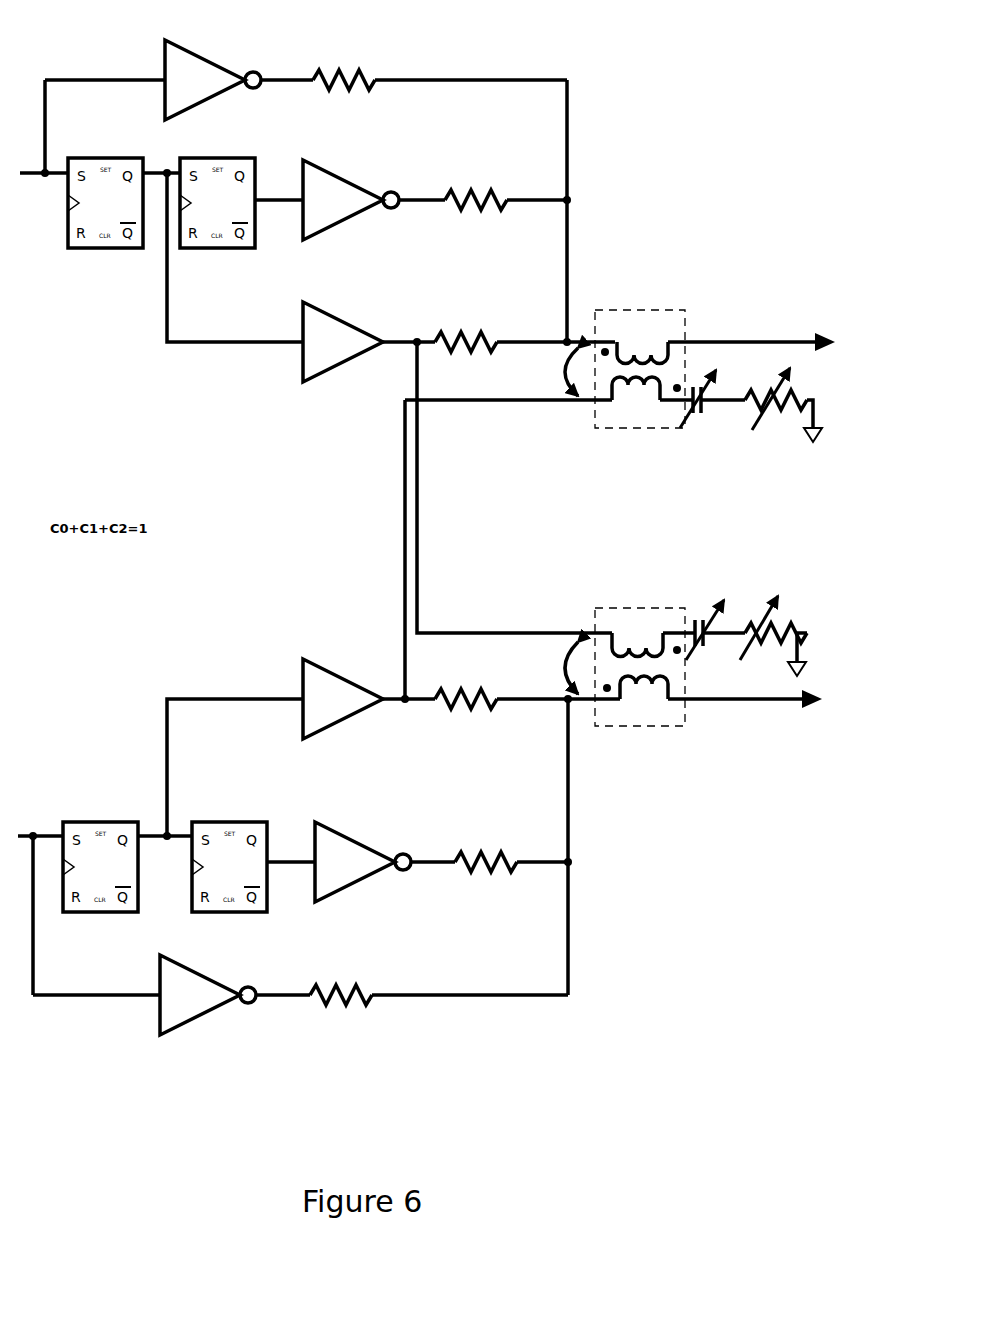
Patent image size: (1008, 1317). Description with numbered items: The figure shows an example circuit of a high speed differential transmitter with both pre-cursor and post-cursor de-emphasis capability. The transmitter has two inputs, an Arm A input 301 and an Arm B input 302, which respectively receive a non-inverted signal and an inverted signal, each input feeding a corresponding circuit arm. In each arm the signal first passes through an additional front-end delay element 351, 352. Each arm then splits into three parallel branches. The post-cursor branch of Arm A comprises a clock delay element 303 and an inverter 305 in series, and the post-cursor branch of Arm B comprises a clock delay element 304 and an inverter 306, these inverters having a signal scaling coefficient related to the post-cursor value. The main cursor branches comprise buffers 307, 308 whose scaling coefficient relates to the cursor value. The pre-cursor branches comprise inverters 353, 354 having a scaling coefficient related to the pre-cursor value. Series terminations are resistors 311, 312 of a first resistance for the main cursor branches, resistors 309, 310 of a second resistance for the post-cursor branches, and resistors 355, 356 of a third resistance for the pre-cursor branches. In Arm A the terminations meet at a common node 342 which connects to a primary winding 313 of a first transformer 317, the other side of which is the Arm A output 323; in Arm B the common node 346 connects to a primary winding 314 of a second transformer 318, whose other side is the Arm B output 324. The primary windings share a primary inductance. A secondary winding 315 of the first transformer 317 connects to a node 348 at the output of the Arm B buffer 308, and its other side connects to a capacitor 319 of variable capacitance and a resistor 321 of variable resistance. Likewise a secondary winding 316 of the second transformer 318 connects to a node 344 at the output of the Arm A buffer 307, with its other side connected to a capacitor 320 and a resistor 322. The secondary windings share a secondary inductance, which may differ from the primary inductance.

The Arm A input 301 is at (30, 323).
The Arm B input 302 is at (20, 762).
The clock delay element 303 is at (228, 270).
The clock delay element 304 is at (244, 800).
The inverter 305 is at (348, 235).
The inverter 306 is at (352, 828).
The buffer 307 is at (323, 398).
The buffer 308 is at (328, 655).
The resistor 309 is at (468, 240).
The resistor 310 is at (492, 880).
The resistor 311 is at (475, 318).
The resistor 312 is at (465, 738).
The primary winding 313 is at (650, 302).
The primary winding 314 is at (648, 745).
The secondary winding 315 is at (640, 430).
The secondary winding 316 is at (640, 608).
The first transformer 317 is at (598, 420).
The second transformer 318 is at (598, 620).
The capacitor 319 is at (700, 430).
The capacitor 320 is at (702, 608).
The resistor 321 is at (783, 430).
The resistor 322 is at (767, 592).
The Arm A output 323 is at (752, 302).
The Arm B output 324 is at (757, 745).
The common node 342 is at (572, 335).
The node 344 is at (415, 348).
The common node 346 is at (566, 705).
The node 348 is at (403, 697).
The front-end delay element 351 is at (107, 257).
The front-end delay element 352 is at (97, 817).
The inverter 353 is at (218, 112).
The inverter 354 is at (218, 975).
The resistor 355 is at (340, 110).
The resistor 356 is at (350, 975).